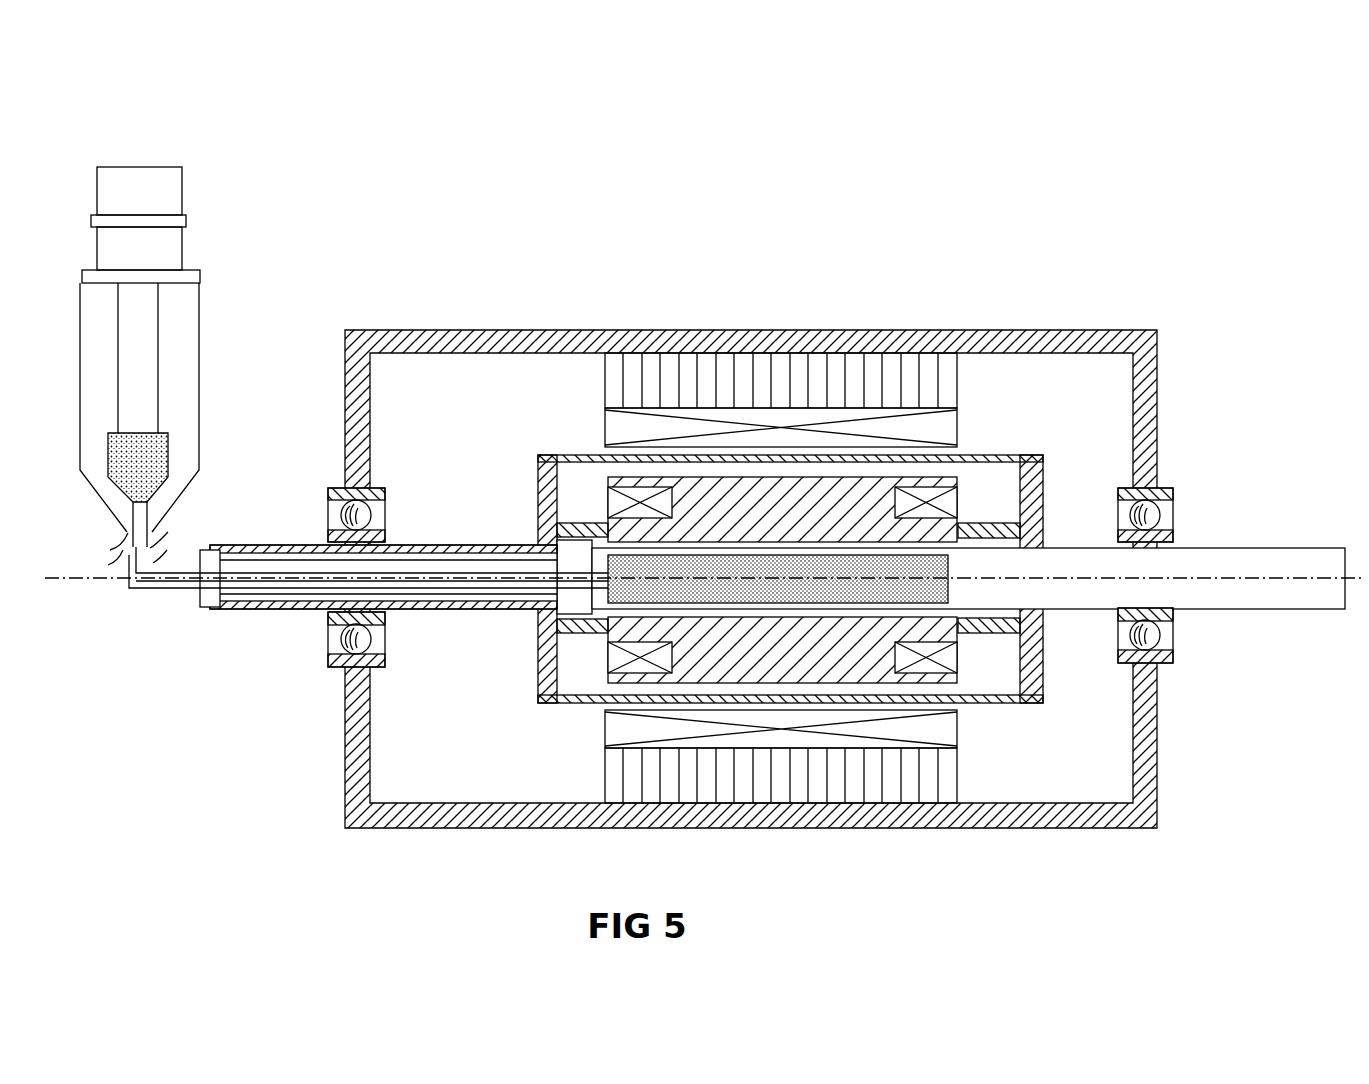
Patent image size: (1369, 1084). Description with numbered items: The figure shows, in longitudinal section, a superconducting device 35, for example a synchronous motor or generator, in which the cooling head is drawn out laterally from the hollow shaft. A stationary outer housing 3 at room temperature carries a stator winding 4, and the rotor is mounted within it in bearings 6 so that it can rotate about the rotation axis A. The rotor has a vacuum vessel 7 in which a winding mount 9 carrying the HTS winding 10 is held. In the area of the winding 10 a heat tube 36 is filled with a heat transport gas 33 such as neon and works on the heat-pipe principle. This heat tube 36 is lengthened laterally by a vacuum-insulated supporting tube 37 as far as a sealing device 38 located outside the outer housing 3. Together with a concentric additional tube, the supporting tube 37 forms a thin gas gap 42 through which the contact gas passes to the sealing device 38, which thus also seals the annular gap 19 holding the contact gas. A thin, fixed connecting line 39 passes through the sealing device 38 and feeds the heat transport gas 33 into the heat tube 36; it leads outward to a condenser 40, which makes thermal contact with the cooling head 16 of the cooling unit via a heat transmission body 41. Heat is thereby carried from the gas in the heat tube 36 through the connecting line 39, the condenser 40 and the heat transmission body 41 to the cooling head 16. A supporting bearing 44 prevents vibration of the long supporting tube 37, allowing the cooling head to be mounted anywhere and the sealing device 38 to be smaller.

The outer housing 3 is at (1148, 395).
The stator winding 4 is at (876, 428).
The bearings 6 is at (1168, 636).
The vacuum vessel 7 is at (1003, 455).
The winding mount 9 is at (751, 517).
The HTS winding 10 is at (615, 662).
The cooling head 16 is at (140, 337).
The annular gap 19 is at (951, 580).
The heat transport gas 33 is at (846, 597).
The superconducting device 35 is at (757, 881).
The heat tube 36 is at (757, 606).
The supporting tube 37 is at (470, 603).
The sealing device 38 is at (203, 613).
The connecting line 39 is at (140, 592).
The condenser 40 is at (157, 462).
The heat transmission body 41 is at (118, 348).
The gas gap 42 is at (383, 584).
The supporting bearing 44 is at (512, 548).
The rotation axis A is at (83, 578).